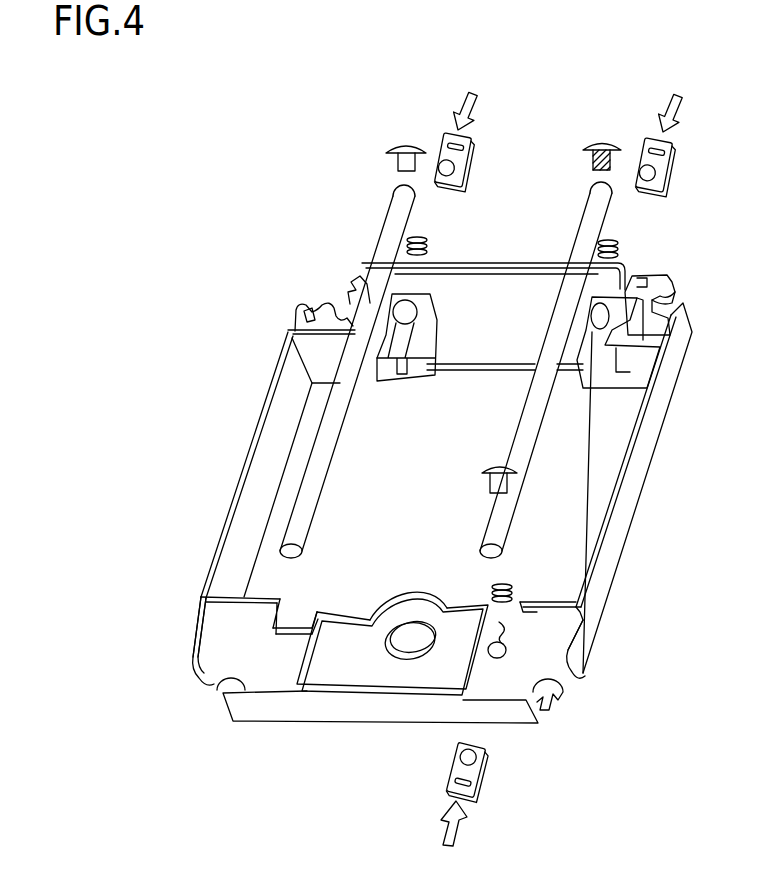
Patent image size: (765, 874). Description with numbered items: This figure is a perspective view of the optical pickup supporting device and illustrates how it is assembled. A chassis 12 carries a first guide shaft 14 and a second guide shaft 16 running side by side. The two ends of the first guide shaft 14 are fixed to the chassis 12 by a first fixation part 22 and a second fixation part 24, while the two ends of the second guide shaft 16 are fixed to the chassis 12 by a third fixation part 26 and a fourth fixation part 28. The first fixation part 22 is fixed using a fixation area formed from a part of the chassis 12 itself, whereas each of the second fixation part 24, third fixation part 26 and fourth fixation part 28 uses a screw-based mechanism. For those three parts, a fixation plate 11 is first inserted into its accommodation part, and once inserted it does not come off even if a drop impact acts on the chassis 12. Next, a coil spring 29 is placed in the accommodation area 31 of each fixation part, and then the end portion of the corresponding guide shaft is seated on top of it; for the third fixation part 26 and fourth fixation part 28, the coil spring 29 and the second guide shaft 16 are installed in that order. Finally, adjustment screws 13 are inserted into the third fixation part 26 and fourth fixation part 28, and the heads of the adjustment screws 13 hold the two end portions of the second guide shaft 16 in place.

The fixation plate 11 is at (476, 163).
The chassis 12 is at (631, 490).
The adjustment screw 13 is at (410, 140).
The first guide shaft 14 is at (392, 222).
The second guide shaft 16 is at (609, 214).
The first fixation part 22 is at (173, 617).
The second fixation part 24 is at (294, 306).
The third fixation part 26 is at (695, 311).
The fourth fixation part 28 is at (614, 502).
The coil spring 29 is at (428, 243).
The accommodation area 31 is at (396, 380).